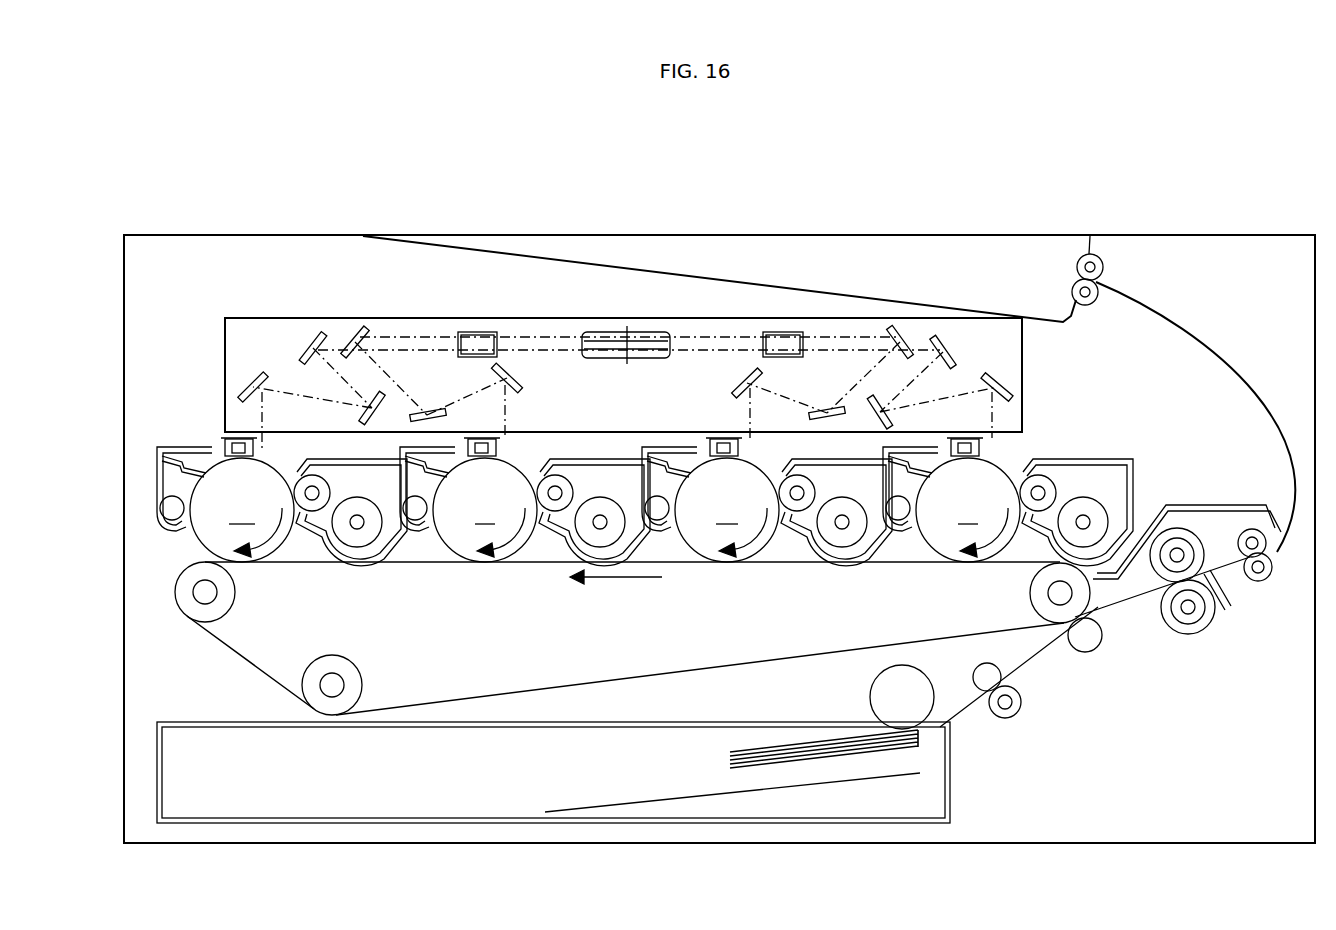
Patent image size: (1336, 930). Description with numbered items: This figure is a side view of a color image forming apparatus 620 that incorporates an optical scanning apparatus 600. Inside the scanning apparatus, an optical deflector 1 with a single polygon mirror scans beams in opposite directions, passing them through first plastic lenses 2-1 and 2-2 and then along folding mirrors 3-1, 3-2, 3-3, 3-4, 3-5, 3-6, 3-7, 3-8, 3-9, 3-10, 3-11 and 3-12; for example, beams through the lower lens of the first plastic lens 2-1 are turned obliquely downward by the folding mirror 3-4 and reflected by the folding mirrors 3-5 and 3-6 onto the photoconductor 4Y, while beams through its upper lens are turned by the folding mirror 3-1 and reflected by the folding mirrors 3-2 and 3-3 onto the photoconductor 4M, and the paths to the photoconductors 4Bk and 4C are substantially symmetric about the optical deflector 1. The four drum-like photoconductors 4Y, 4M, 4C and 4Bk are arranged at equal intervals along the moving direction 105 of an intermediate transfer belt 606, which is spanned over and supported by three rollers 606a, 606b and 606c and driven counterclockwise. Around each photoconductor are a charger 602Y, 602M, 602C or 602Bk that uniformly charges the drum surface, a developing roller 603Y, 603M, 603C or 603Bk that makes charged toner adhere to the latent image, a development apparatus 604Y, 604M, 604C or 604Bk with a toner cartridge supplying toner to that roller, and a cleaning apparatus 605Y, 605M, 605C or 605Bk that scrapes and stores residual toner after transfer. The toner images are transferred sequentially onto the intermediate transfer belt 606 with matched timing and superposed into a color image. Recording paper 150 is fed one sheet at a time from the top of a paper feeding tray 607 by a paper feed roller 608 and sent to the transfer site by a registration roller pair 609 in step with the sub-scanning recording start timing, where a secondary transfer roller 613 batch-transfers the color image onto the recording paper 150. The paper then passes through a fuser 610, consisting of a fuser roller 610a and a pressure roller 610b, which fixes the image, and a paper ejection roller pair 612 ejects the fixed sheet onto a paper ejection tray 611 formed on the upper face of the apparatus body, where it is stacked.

The color image forming apparatus 620 is at (1214, 229).
The paper ejection tray 611 is at (884, 237).
The paper ejection roller pair 612 is at (1110, 266).
The optical scanning apparatus 600 is at (404, 310).
The first plastic lens 2-2 is at (478, 331).
The optical deflector 1 is at (633, 330).
The first plastic lens 2-1 is at (783, 331).
The folding mirror 3-1 is at (906, 328).
The folding mirror 3-2 is at (822, 407).
The folding mirror 3-3 is at (738, 380).
The folding mirror 3-4 is at (956, 354).
The folding mirror 3-5 is at (874, 426).
The folding mirror 3-6 is at (1016, 380).
The folding mirror 3-7 is at (305, 352).
The folding mirror 3-8 is at (362, 411).
The folding mirror 3-9 is at (240, 378).
The folding mirror 3-10 is at (352, 330).
The folding mirror 3-11 is at (436, 408).
The folding mirror 3-12 is at (520, 378).
The photoconductor 4Bk is at (215, 510).
The photoconductor 4C is at (485, 531).
The photoconductor 4M is at (727, 531).
The photoconductor 4Y is at (968, 531).
The charger 602Bk is at (196, 410).
The charger 602C is at (522, 447).
The charger 602M is at (703, 424).
The charger 602Y is at (958, 427).
The developing roller 603Bk is at (318, 537).
The developing roller 603C is at (543, 537).
The developing roller 603M is at (786, 539).
The developing roller 603Y is at (1053, 467).
The development apparatus 604Bk is at (342, 500).
The development apparatus 604C is at (594, 482).
The development apparatus 604M is at (836, 541).
The development apparatus 604Y is at (1089, 491).
The cleaning apparatus 605Bk is at (174, 464).
The cleaning apparatus 605C is at (419, 523).
The cleaning apparatus 605M is at (671, 543).
The cleaning apparatus 605Y is at (909, 524).
The moving direction 105 is at (598, 582).
The intermediate transfer belt 606 is at (240, 655).
The roller 606a is at (228, 608).
The roller 606b is at (362, 683).
The roller 606c is at (1034, 606).
The paper feeding tray 607 is at (155, 772).
The recording paper 150 is at (758, 748).
The paper feed roller 608 is at (870, 692).
The registration roller pair 609 is at (1026, 714).
The secondary transfer roller 613 is at (1087, 653).
The fuser 610 is at (1224, 499).
The fuser roller 610a is at (1173, 526).
The pressure roller 610b is at (1193, 636).